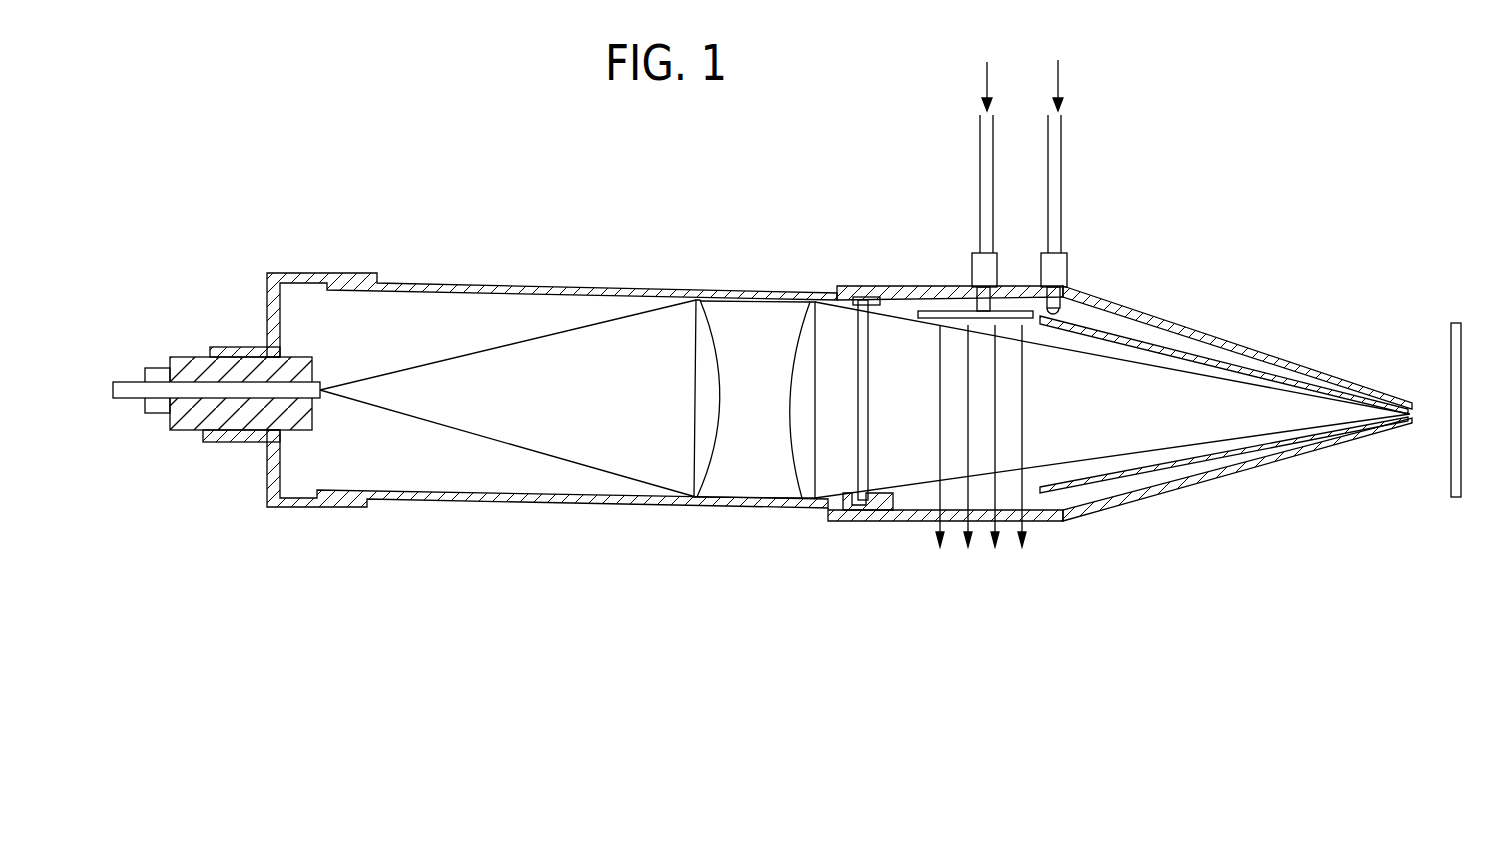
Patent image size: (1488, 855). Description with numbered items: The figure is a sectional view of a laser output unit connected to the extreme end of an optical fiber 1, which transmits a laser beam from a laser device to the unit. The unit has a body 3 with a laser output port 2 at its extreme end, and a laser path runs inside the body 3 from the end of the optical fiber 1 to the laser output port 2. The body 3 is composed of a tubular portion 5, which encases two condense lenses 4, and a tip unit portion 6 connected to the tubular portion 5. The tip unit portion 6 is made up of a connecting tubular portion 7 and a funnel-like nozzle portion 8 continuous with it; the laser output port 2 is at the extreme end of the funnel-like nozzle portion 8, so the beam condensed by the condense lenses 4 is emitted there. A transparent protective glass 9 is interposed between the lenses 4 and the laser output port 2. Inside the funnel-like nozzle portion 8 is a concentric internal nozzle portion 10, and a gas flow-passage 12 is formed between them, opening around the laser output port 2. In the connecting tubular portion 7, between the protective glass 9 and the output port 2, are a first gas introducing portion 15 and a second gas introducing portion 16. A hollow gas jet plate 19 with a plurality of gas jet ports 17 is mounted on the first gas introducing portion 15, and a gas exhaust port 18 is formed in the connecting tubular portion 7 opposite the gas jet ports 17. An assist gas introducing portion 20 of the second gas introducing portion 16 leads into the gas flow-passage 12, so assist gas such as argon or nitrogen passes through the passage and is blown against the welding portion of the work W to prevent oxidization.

The optical fiber 1 is at (131, 382).
The laser output port 2 is at (1420, 398).
The body 3 is at (492, 282).
The condense lenses 4 is at (720, 325).
The tubular portion 5 is at (577, 294).
The tip unit portion 6 is at (1172, 312).
The connecting tubular portion 7 is at (912, 287).
The funnel-like nozzle portion 8 is at (1245, 348).
The protective glass 9 is at (868, 416).
The internal nozzle portion 10 is at (1122, 316).
The gas flow-passage 12 is at (1087, 310).
The first gas introducing portion 15 is at (972, 253).
The second gas introducing portion 16 is at (1038, 253).
The gas jet ports 17 is at (1033, 320).
The gas exhaust port 18 is at (923, 518).
The hollow gas jet plate 19 is at (947, 311).
The assist gas introducing portion 20 is at (1070, 297).
The work W is at (1450, 445).